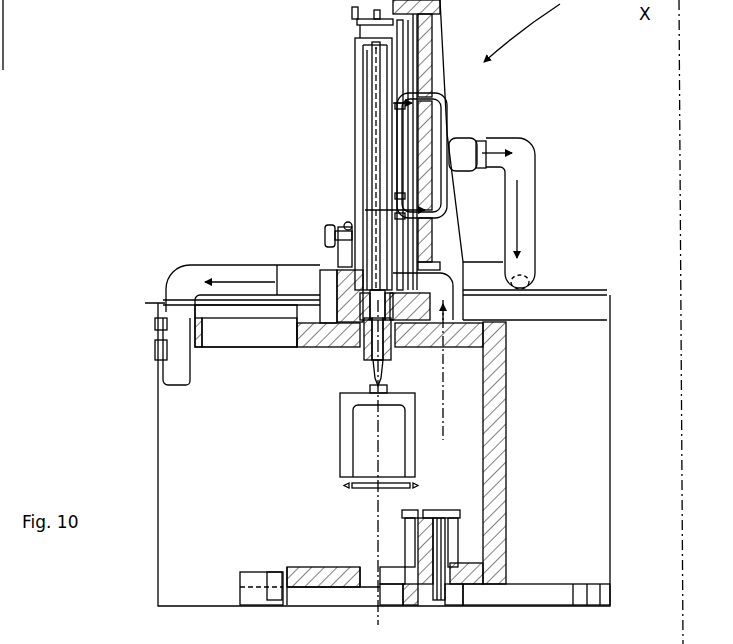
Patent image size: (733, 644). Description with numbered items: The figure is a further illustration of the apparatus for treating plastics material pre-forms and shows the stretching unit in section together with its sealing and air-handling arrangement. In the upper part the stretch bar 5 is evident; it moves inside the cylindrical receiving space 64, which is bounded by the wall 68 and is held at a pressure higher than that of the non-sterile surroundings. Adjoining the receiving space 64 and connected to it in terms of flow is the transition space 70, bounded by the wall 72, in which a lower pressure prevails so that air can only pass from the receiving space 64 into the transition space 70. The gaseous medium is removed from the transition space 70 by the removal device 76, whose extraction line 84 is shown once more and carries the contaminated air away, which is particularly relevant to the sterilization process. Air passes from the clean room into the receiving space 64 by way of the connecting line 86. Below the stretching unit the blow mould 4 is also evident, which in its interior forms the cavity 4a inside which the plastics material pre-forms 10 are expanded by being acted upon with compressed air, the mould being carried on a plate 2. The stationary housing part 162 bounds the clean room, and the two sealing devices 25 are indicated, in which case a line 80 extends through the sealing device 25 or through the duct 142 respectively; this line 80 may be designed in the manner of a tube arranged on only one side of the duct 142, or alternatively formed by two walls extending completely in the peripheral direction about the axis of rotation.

The mounting plate 2 is at (330, 335).
The blow mould 4 is at (347, 435).
The cavity 4a is at (393, 458).
The stretch bar 5 is at (375, 100).
The plastics material pre-forms 10 is at (373, 372).
The sealing devices 25 is at (150, 318).
The receiving space 64 is at (370, 70).
The wall 68 is at (363, 215).
The transition space 70 is at (357, 96).
The wall 72 is at (357, 187).
The removal device 76 is at (513, 128).
The line 80 is at (182, 343).
The extraction line 84 is at (252, 273).
The connecting line 86 is at (447, 333).
The duct 142 is at (162, 337).
The housing part 162 is at (160, 405).